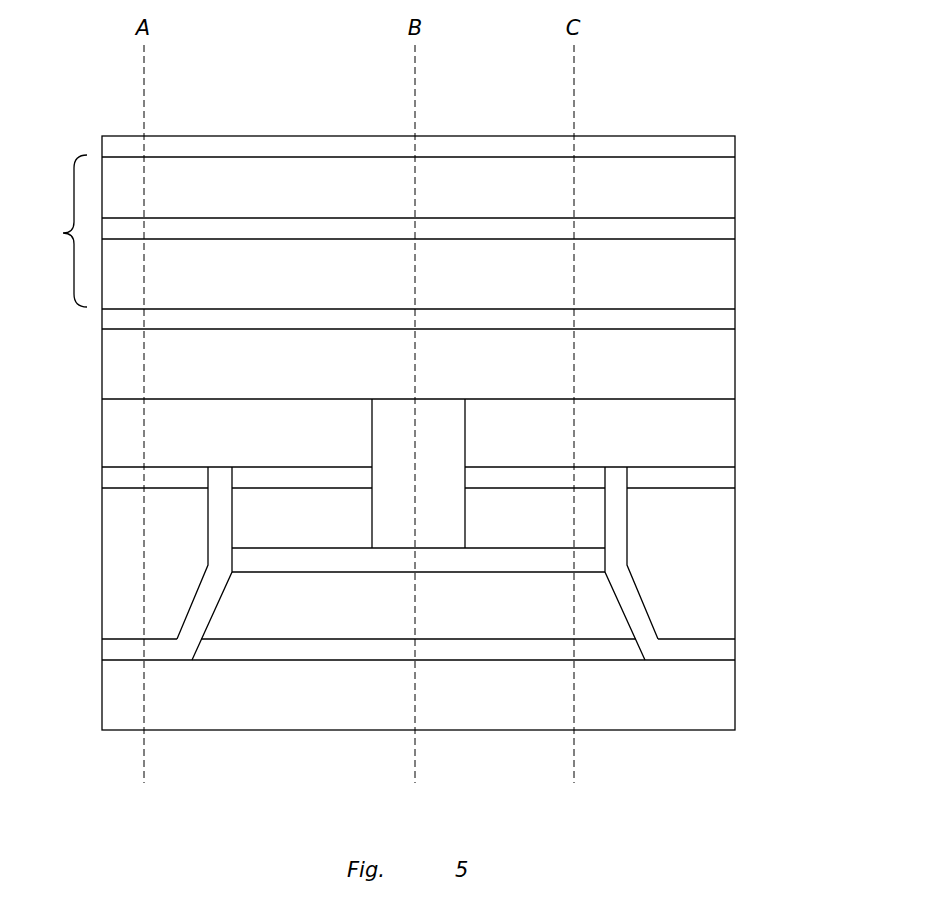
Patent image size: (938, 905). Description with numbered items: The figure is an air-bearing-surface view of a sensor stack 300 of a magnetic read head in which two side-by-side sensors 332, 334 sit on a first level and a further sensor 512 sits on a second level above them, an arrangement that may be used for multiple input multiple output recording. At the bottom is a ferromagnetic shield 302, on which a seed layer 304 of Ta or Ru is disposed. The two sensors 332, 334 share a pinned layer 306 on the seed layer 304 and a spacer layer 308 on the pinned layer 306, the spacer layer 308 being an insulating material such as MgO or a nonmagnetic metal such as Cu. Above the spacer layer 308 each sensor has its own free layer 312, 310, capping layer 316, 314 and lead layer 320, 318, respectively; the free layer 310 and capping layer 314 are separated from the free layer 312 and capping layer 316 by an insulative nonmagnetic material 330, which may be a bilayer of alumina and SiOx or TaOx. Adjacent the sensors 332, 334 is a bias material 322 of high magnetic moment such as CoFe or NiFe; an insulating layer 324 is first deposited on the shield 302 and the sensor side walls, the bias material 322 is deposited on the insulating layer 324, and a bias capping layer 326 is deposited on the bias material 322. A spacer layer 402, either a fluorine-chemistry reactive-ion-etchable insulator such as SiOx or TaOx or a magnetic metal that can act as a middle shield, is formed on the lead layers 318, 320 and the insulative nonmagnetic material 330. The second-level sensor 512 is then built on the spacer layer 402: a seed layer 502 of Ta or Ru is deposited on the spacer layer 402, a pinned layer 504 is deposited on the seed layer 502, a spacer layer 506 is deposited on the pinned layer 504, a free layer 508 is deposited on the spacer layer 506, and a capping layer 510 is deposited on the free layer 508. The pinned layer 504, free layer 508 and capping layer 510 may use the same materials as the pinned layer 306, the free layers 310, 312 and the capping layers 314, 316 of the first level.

The sensor stack 300 is at (758, 432).
The shield 302 is at (391, 698).
The seed layer 304 is at (291, 650).
The pinned layer 306 is at (391, 618).
The spacer layer 308 is at (515, 557).
The free layer 310 is at (554, 531).
The free layer 312 is at (328, 531).
The capping layer 314 is at (545, 478).
The capping layer 316 is at (292, 478).
The lead layer 318 is at (659, 448).
The lead layer 320 is at (219, 448).
The bias material 322 is at (194, 561).
The insulating layer 324 is at (112, 651).
The bias capping layer 326 is at (112, 480).
The insulative nonmagnetic material 330 is at (444, 410).
The sensor 332 is at (288, 383).
The sensor 334 is at (537, 385).
The spacer layer 402 is at (391, 375).
The seed layer 502 is at (725, 321).
The pinned layer 504 is at (391, 286).
The spacer layer 506 is at (725, 230).
The free layer 508 is at (391, 201).
The capping layer 510 is at (725, 148).
The sensor 512 is at (53, 231).